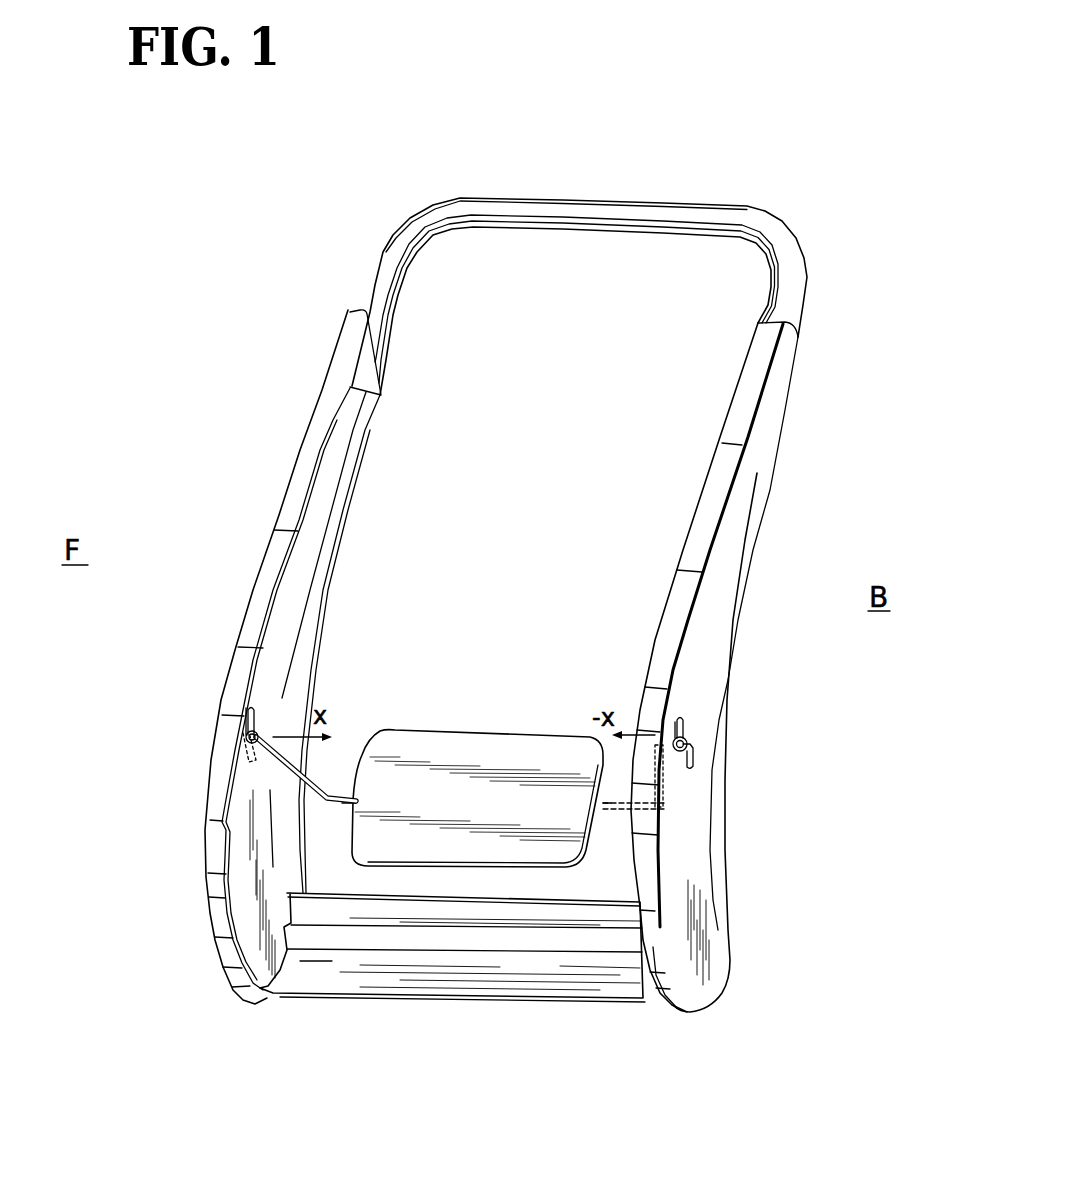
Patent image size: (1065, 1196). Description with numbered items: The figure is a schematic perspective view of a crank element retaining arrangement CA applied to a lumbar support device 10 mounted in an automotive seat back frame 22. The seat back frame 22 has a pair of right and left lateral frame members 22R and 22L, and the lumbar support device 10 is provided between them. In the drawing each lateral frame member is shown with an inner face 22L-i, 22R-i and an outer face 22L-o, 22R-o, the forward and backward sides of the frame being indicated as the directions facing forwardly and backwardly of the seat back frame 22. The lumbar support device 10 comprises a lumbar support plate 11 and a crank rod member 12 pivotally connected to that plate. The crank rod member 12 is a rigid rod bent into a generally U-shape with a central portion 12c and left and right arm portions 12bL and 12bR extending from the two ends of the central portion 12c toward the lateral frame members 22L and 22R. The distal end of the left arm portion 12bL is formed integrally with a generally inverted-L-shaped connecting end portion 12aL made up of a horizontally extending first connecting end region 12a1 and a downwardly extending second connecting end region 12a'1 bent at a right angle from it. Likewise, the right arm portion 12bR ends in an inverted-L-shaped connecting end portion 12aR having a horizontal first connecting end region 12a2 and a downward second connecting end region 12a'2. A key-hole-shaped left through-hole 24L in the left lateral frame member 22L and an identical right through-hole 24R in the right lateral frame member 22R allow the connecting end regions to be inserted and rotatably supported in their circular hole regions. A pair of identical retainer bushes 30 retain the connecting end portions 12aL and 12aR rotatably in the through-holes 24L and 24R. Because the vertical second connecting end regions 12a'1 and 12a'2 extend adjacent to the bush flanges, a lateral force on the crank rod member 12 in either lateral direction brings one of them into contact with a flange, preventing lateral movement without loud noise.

The lumbar support device 10 is at (476, 690).
The lumbar support plate 11 is at (512, 738).
The crank rod member 12 is at (364, 730).
The left connecting end portion 12aL is at (118, 730).
The first connecting end region 12a1 is at (249, 731).
The second connecting end region 12a'1 is at (187, 768).
The right connecting end portion 12aR is at (838, 738).
The first connecting end region 12a2 is at (693, 741).
The second connecting end region 12a'2 is at (750, 777).
The left arm portion 12bL is at (338, 781).
The right arm portion 12bR is at (667, 773).
The central portion 12c is at (342, 803).
The seat back frame 22 is at (662, 172).
The left lateral frame member 22L is at (262, 595).
The left leg inner face 22L-i is at (277, 633).
The left leg outer face 22L-o is at (226, 697).
The right lateral frame member 22R is at (717, 623).
The right leg inner face 22R-i is at (690, 652).
The right leg outer face 22R-o is at (717, 597).
The left through-hole 24L is at (256, 705).
The right through-hole 24R is at (699, 719).
The retainer bush 30 is at (262, 762).
The crank element retaining arrangement CA is at (172, 933).